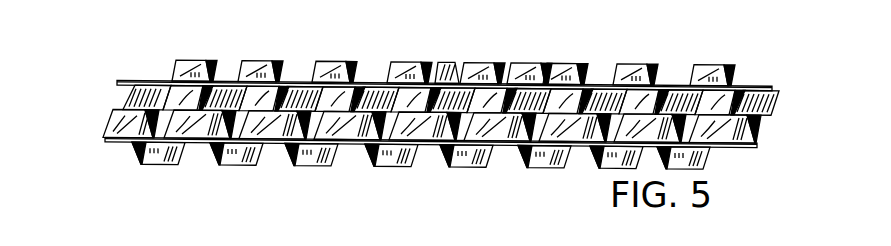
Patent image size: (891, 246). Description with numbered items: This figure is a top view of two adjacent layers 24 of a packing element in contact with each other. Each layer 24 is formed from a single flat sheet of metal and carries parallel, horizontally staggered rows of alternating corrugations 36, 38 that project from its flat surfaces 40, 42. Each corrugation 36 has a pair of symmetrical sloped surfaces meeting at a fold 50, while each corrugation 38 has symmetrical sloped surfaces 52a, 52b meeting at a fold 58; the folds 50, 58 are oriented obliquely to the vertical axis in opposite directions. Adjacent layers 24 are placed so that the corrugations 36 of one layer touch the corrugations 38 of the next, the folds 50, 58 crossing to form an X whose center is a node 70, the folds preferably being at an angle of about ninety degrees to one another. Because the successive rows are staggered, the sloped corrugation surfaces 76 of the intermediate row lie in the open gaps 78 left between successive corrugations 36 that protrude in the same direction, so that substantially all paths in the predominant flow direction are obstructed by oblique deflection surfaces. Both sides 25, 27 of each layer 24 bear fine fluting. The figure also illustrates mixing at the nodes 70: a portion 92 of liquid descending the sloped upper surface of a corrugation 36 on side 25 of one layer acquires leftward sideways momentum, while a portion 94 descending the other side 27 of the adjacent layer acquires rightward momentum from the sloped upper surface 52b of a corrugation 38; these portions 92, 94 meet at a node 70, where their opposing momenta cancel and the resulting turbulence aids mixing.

The layer 24 is at (460, 108).
The side of layer 25 is at (110, 146).
The other side of layer 27 is at (205, 98).
The corrugation 36 is at (376, 93).
The corrugation 38 is at (749, 79).
The flat surface 40 is at (771, 91).
The flat surface 42 is at (757, 148).
The fold 50 is at (606, 106).
The sloped surface 52a is at (745, 76).
The sloped upper surface 52b is at (697, 84).
The fold 58 is at (628, 66).
The node 70 is at (277, 103).
The corrugation surface 76 is at (488, 98).
The open gap 78 is at (348, 97).
The portion of liquid 92 is at (294, 90).
The portion of liquid 94 is at (284, 113).